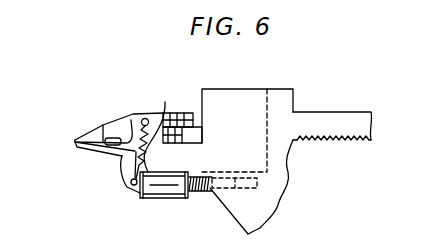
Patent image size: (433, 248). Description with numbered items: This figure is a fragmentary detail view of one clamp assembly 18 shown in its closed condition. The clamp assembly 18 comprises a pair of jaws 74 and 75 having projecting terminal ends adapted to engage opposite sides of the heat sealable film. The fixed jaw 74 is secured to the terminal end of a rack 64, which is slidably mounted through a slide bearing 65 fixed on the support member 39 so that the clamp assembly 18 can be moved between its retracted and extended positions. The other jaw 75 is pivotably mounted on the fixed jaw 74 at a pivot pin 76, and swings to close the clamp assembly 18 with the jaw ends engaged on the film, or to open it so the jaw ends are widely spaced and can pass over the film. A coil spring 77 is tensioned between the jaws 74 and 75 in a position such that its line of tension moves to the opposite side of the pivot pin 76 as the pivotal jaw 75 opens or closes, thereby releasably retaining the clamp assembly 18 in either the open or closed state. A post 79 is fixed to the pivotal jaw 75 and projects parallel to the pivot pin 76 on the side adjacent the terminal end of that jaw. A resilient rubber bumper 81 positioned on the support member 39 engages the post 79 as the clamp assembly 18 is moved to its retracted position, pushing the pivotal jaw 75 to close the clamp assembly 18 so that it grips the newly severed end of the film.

The clamp assembly 18 is at (115, 100).
The fixed jaw 74 is at (111, 124).
The pivotal jaw 75 is at (112, 150).
The pivot pin 76 is at (165, 102).
The coil spring 77 is at (123, 155).
The post 79 is at (129, 189).
The resilient rubber bumper 81 is at (152, 198).
The support member 39 is at (220, 98).
The rack 64 is at (330, 122).
The slide bearing 65 is at (272, 156).